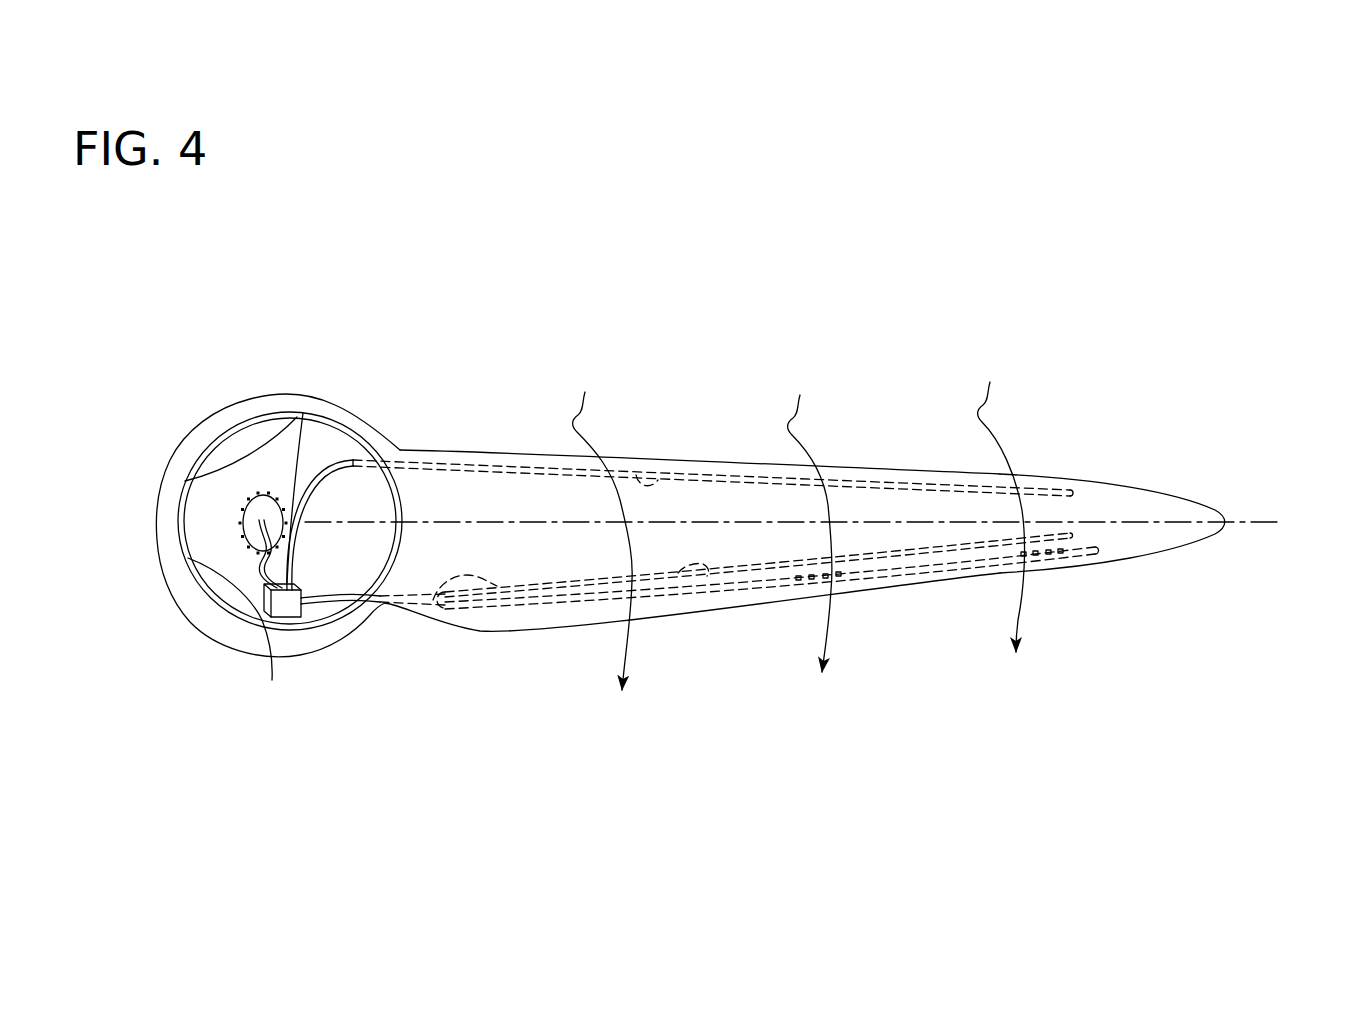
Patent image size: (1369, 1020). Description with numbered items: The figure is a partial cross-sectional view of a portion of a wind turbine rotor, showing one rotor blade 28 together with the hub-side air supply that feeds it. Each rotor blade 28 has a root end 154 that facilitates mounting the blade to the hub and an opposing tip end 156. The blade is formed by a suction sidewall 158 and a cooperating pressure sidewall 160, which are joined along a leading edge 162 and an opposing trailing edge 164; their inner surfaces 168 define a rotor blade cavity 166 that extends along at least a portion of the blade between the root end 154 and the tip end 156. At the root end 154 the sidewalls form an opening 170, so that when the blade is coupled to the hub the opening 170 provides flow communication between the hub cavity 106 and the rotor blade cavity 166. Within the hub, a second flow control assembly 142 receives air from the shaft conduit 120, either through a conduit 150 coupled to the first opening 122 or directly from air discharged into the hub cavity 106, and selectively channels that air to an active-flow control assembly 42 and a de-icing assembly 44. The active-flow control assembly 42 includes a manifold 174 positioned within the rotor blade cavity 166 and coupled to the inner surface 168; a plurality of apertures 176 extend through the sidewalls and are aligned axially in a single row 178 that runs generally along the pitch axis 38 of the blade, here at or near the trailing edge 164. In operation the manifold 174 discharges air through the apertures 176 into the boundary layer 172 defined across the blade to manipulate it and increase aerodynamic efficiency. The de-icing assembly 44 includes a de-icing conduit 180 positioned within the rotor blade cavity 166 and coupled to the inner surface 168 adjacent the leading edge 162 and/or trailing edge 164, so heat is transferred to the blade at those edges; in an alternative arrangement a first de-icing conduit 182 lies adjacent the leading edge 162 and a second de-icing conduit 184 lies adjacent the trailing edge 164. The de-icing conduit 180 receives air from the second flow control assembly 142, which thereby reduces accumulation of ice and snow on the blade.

The rotor blade 28 is at (1060, 352).
The pitch axis 38 is at (1258, 520).
The active-flow control assembly 42 is at (608, 611).
The de-icing assembly 44 is at (1045, 467).
The hub cavity 106 is at (243, 553).
The shaft conduit 120 is at (279, 490).
The first opening 122 is at (252, 499).
The second flow control assembly 142 is at (287, 607).
The conduit 150 is at (240, 537).
The root end 154 is at (410, 395).
The tip end 156 is at (1237, 413).
The suction sidewall 158 is at (692, 493).
The pressure sidewall 160 is at (648, 633).
The leading edge 162 is at (896, 466).
The trailing edge 164 is at (912, 582).
The rotor blade cavity 166 is at (802, 505).
The inner surface 168 is at (863, 465).
The opening 170 is at (318, 617).
The boundary layer 172 is at (799, 525).
The manifold 174 is at (1067, 553).
The apertures 176 is at (852, 583).
The single row 178 is at (808, 598).
The de-icing conduit 180 is at (486, 465).
The first de-icing conduit 182 is at (657, 470).
The second de-icing conduit 184 is at (710, 573).